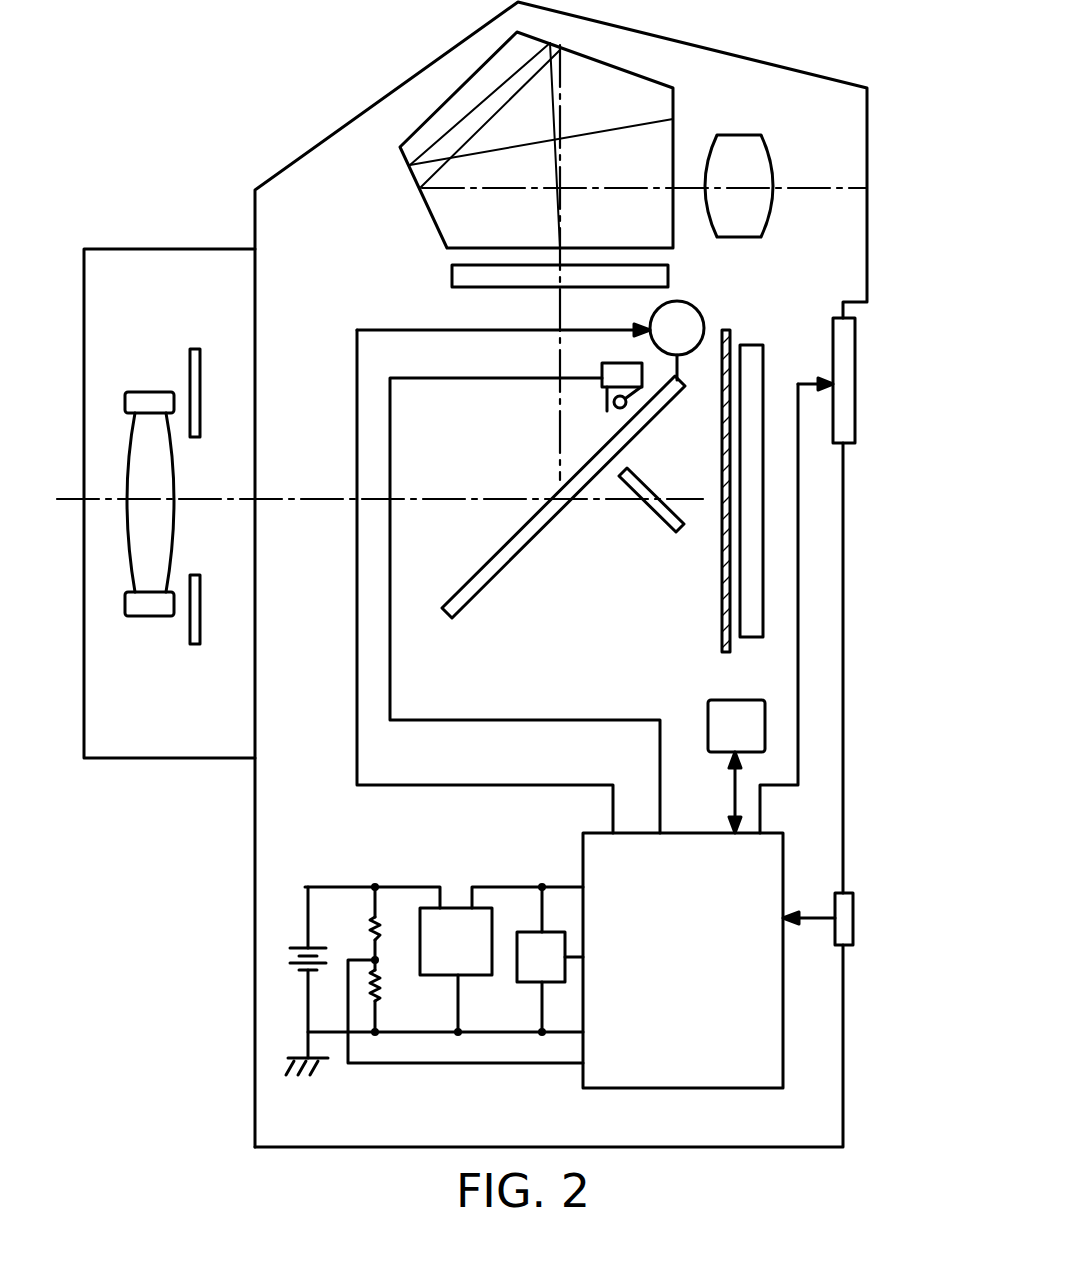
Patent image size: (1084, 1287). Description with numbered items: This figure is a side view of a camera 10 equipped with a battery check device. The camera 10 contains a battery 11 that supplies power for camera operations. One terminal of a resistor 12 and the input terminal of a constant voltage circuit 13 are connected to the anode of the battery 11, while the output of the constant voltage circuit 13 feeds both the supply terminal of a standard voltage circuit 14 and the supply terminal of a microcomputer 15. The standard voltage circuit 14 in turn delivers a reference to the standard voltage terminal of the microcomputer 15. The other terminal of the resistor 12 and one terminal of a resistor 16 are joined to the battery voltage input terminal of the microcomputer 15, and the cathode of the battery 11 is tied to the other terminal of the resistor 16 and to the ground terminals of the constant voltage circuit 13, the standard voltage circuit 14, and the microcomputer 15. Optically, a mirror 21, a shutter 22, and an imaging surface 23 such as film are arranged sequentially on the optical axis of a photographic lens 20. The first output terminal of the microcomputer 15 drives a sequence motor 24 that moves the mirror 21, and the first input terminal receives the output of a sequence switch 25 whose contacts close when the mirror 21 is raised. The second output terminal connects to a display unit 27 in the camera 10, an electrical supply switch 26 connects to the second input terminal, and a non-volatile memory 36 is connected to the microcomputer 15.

The camera 10 is at (256, 878).
The battery 11 is at (297, 960).
The resistor 12 is at (377, 926).
The constant voltage circuit 13 is at (420, 926).
The standard voltage circuit 14 is at (531, 932).
The microcomputer 15 is at (605, 1088).
The resistor 16 is at (380, 993).
The photographic lens 20 is at (148, 392).
The mirror 21 is at (508, 570).
The shutter 22 is at (722, 600).
The imaging surface 23 is at (752, 637).
The sequence motor 24 is at (696, 310).
The sequence switch 25 is at (525, 598).
The electrical supply switch 26 is at (857, 920).
The display unit 27 is at (857, 368).
The non-volatile memory 36 is at (708, 714).